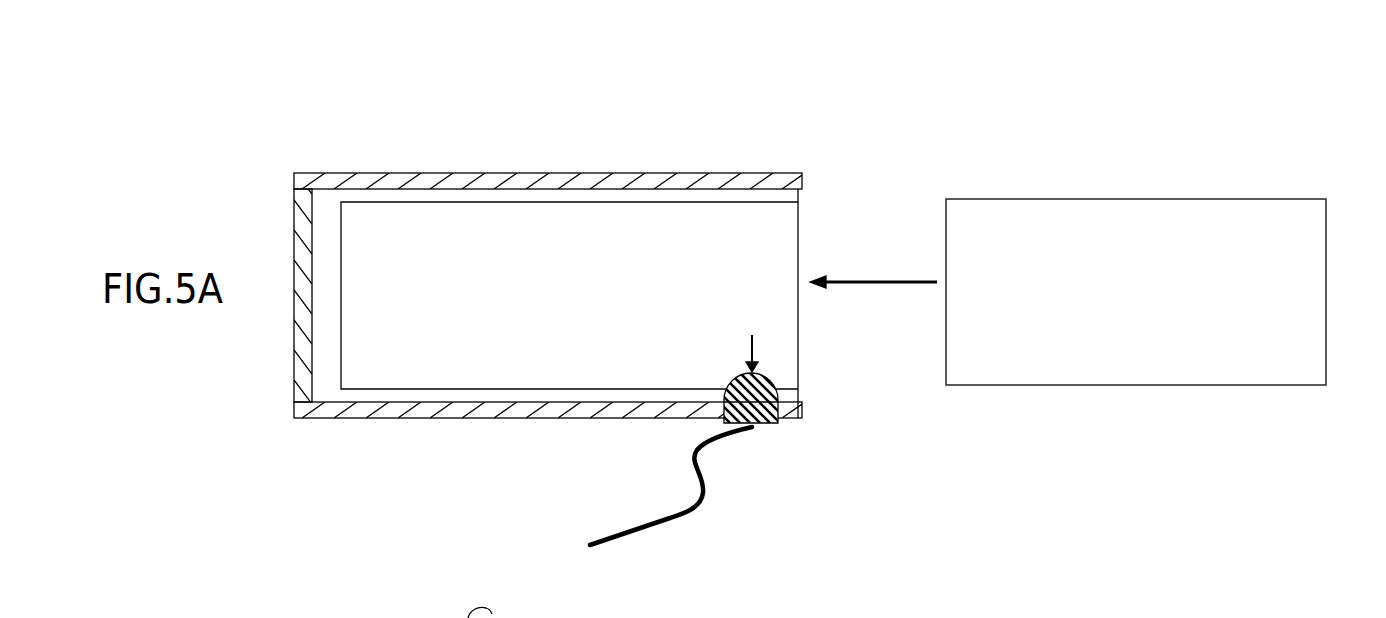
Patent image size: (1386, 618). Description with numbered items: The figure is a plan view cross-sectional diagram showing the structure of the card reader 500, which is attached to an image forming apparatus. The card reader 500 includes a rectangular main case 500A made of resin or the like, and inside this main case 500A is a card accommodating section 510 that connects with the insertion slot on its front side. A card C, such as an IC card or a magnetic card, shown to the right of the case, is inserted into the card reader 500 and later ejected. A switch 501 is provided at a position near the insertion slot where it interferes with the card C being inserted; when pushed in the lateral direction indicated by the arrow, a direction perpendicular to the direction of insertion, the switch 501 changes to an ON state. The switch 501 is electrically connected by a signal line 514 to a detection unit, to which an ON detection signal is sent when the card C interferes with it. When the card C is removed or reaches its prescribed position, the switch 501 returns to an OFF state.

The card reader 500 is at (571, 135).
The main case 500A is at (713, 182).
The card accommodating section 510 is at (772, 229).
The switch 501 is at (778, 415).
The signal line 514 is at (663, 523).
The card C is at (1155, 207).